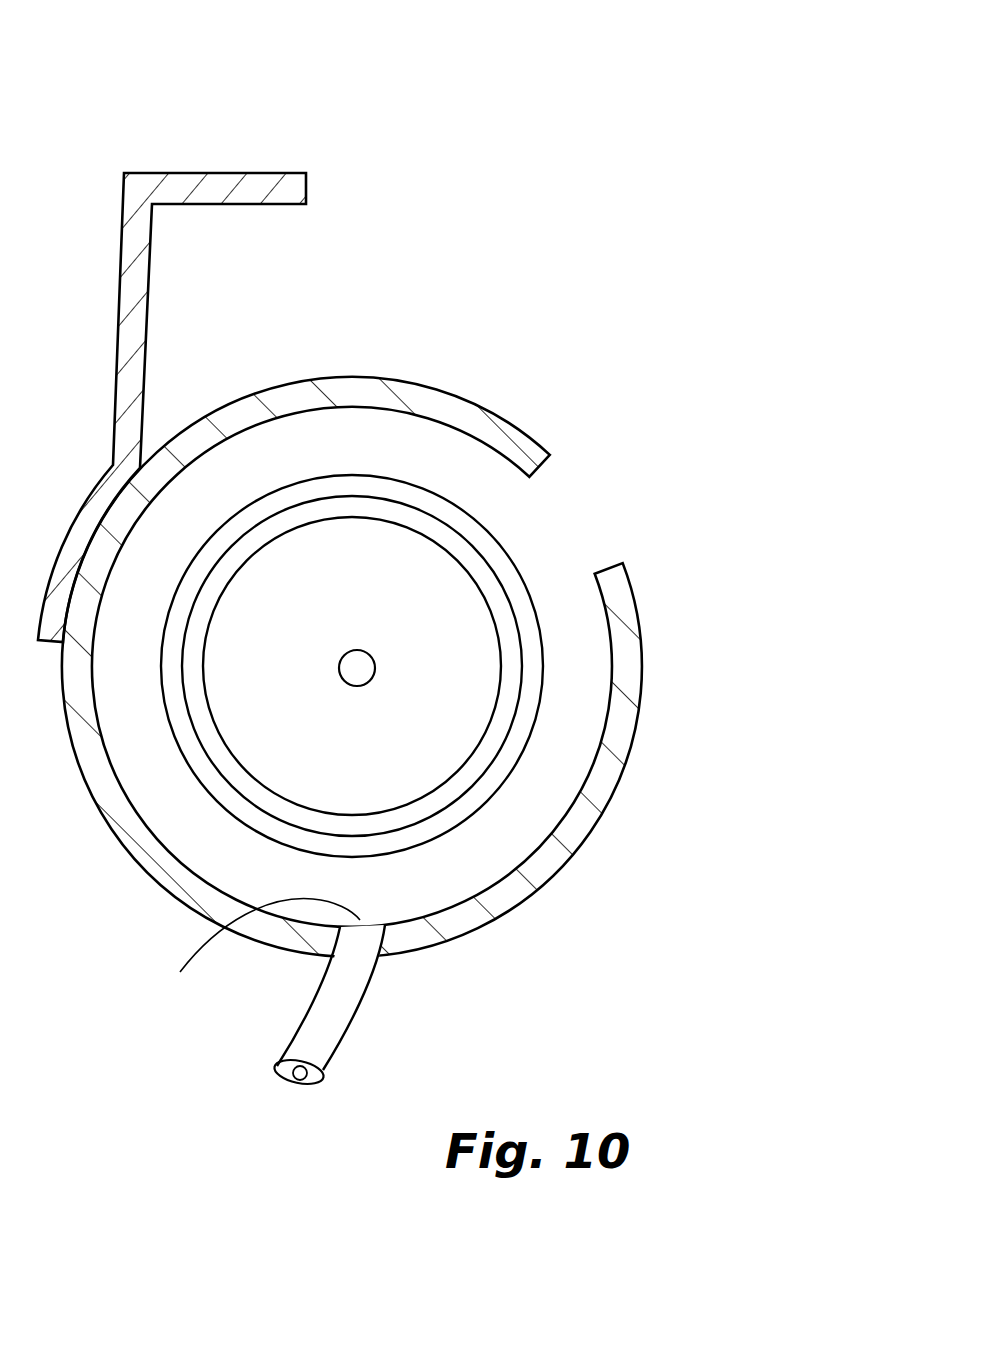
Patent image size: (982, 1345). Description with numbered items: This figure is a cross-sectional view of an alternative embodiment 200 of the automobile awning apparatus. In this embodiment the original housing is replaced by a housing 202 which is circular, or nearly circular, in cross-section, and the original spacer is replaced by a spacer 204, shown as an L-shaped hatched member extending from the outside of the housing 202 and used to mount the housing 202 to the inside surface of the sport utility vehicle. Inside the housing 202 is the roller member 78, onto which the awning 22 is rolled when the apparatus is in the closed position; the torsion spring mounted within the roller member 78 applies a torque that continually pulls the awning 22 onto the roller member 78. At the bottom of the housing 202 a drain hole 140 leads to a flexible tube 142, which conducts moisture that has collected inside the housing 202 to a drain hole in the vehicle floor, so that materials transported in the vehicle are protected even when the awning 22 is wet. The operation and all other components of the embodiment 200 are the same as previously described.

The alternative embodiment of the invention 200 is at (440, 74).
The housing 202 is at (473, 403).
The spacer 204 is at (308, 190).
The awning 22 is at (410, 478).
The roller member 78 is at (503, 697).
The drain hole 140 is at (227, 964).
The flexible tube 142 is at (360, 1020).